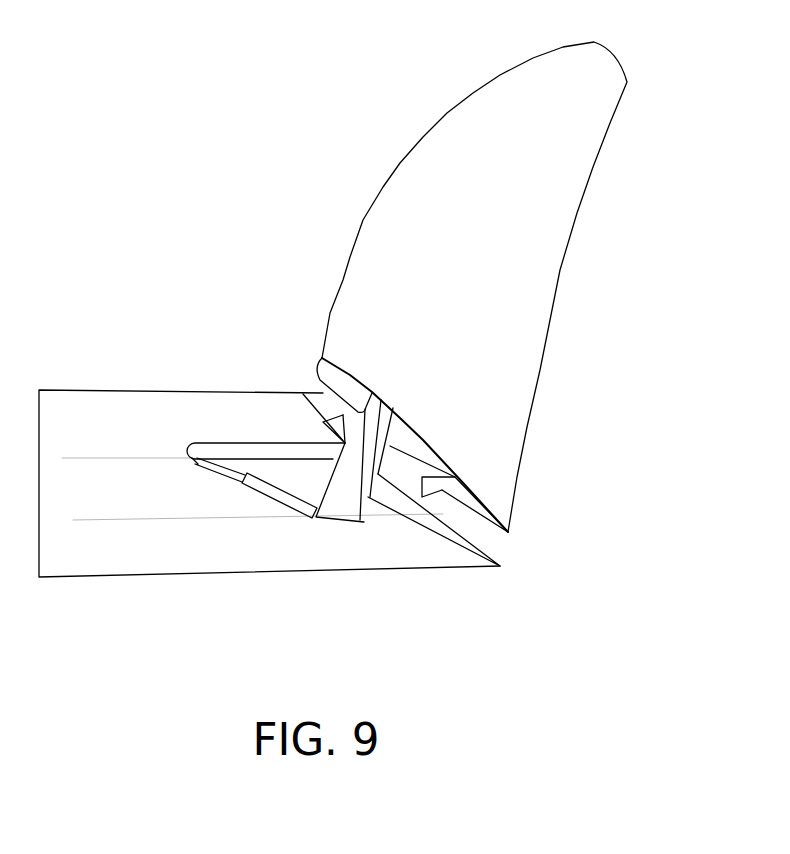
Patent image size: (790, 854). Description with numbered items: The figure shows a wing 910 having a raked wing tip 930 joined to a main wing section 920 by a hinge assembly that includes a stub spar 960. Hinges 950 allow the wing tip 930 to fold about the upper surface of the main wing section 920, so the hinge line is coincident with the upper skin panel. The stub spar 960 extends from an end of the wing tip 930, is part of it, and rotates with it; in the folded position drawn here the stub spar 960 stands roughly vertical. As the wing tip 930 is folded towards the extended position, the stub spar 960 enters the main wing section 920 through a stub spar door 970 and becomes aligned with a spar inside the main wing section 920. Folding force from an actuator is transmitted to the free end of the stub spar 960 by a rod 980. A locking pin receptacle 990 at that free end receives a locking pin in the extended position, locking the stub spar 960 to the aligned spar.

The wing 910 is at (176, 240).
The main wing section 920 is at (128, 578).
The wing tip 930 is at (556, 54).
The hinges 950 is at (436, 484).
The stub spar 960 is at (372, 500).
The stub spar door 970 is at (277, 452).
The rod 980 is at (282, 497).
The locking pin receptacle 990 is at (338, 520).